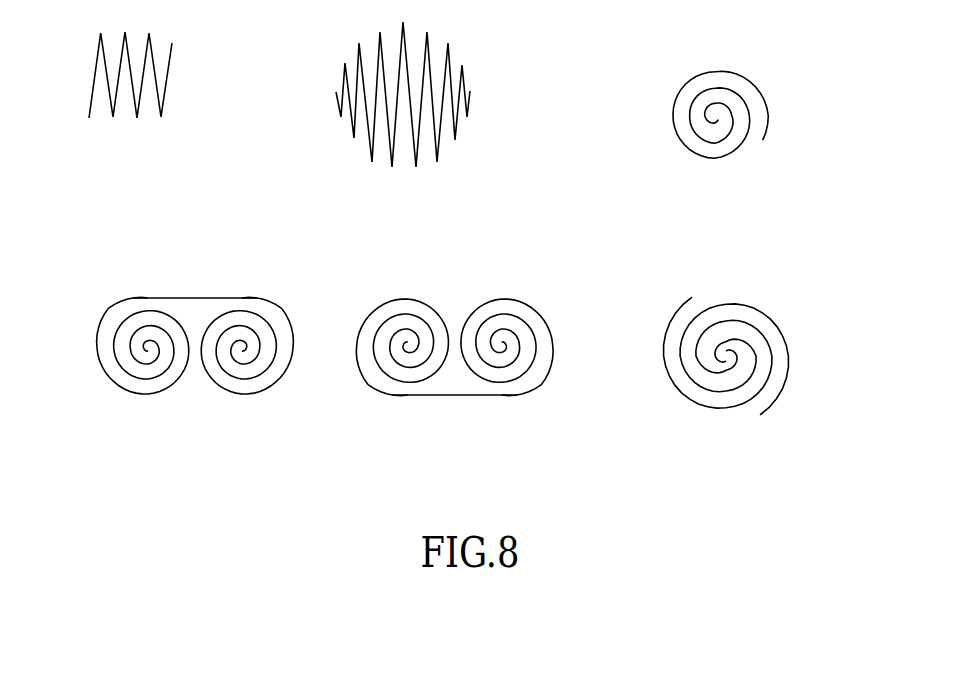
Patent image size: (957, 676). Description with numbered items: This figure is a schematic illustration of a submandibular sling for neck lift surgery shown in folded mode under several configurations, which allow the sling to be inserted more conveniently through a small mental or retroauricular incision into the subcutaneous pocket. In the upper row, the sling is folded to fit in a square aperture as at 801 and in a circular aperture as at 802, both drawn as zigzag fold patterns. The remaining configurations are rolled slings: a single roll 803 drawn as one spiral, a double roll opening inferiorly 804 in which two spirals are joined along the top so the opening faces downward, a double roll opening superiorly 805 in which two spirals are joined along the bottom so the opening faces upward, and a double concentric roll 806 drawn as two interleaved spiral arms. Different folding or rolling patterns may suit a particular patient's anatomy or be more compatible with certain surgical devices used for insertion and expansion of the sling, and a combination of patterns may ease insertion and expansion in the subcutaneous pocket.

The square aperture folding 801 is at (175, 135).
The circular aperture folding 802 is at (424, 130).
The single roll 803 is at (741, 155).
The double roll opening inferiorly 804 is at (195, 389).
The double roll opening superiorly 805 is at (454, 390).
The double concentric roll 806 is at (736, 389).